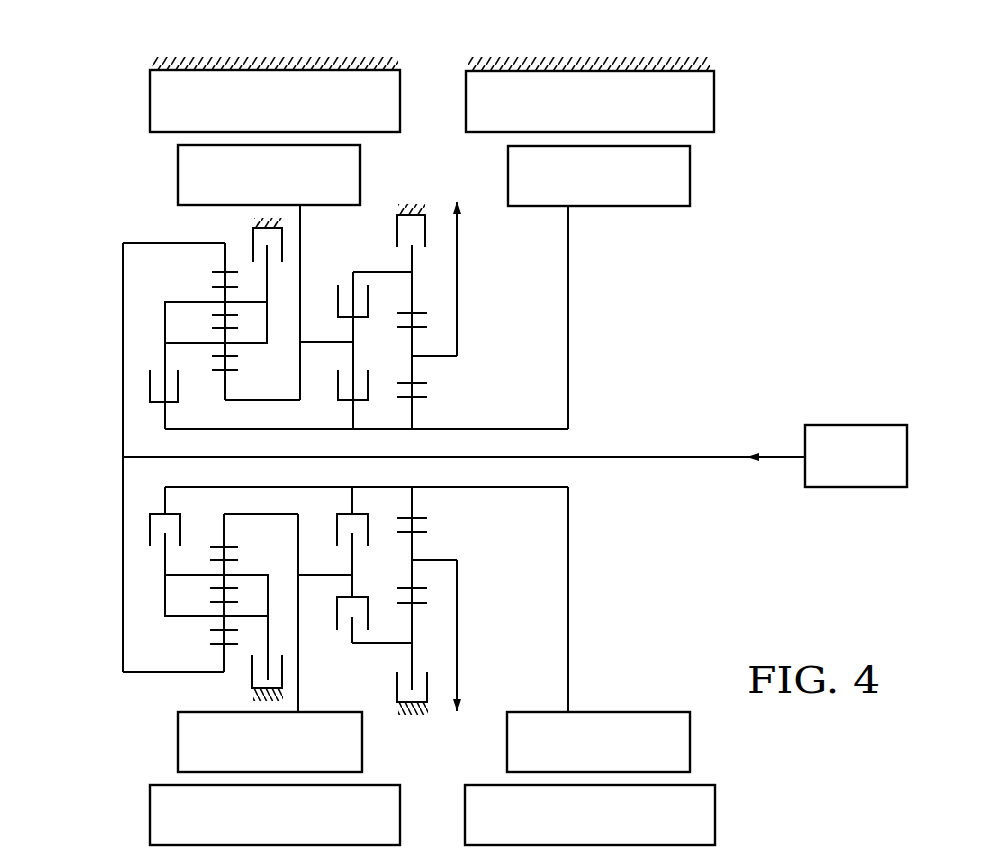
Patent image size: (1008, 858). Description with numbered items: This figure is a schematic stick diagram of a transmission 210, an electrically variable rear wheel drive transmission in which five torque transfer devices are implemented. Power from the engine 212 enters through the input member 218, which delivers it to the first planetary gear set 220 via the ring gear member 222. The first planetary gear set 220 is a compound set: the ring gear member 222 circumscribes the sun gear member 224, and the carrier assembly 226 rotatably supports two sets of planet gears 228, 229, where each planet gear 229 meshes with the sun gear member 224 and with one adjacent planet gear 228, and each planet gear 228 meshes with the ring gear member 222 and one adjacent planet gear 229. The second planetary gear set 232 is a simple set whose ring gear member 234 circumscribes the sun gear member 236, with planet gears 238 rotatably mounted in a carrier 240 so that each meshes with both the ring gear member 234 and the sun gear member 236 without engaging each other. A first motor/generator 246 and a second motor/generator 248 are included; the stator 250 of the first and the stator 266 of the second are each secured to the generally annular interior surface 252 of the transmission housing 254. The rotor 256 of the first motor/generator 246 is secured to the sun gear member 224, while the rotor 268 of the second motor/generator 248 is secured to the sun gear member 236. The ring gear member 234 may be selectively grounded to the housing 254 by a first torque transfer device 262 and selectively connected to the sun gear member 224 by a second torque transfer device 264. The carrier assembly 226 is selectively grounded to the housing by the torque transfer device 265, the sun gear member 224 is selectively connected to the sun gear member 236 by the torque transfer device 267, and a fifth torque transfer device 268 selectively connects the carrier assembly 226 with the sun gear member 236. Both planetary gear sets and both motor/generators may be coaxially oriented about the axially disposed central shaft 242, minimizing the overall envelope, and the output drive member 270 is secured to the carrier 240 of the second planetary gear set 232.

The transmission 210 is at (749, 269).
The engine 212 is at (850, 487).
The input member 218 is at (615, 457).
The first planetary gear set 220 is at (180, 442).
The ring gear member 222 is at (212, 272).
The sun gear member 224 is at (212, 372).
The carrier assembly 226 is at (147, 313).
The planet gears 228 is at (212, 287).
The planet gears 229 is at (237, 333).
The second planetary gear set 232 is at (441, 398).
The ring gear member 234 is at (419, 313).
The sun gear member 236 is at (418, 400).
The planet gears 238 is at (403, 383).
The carrier 240 is at (424, 343).
The central shaft 242 is at (493, 457).
The first motor/generator 246 is at (218, 133).
The second motor/generator 248 is at (641, 245).
The stator 250 is at (150, 86).
The interior surface 252 is at (165, 76).
The transmission housing 254 is at (300, 211).
The rotor 256 is at (178, 176).
The first torque transfer device 262 is at (383, 226).
The second torque transfer device 264 is at (331, 281).
The torque transfer device 265 is at (248, 253).
The stator 266 is at (716, 80).
The torque transfer device 267 is at (362, 506).
The fifth torque transfer device 268 is at (690, 185).
The output drive member 270 is at (461, 212).